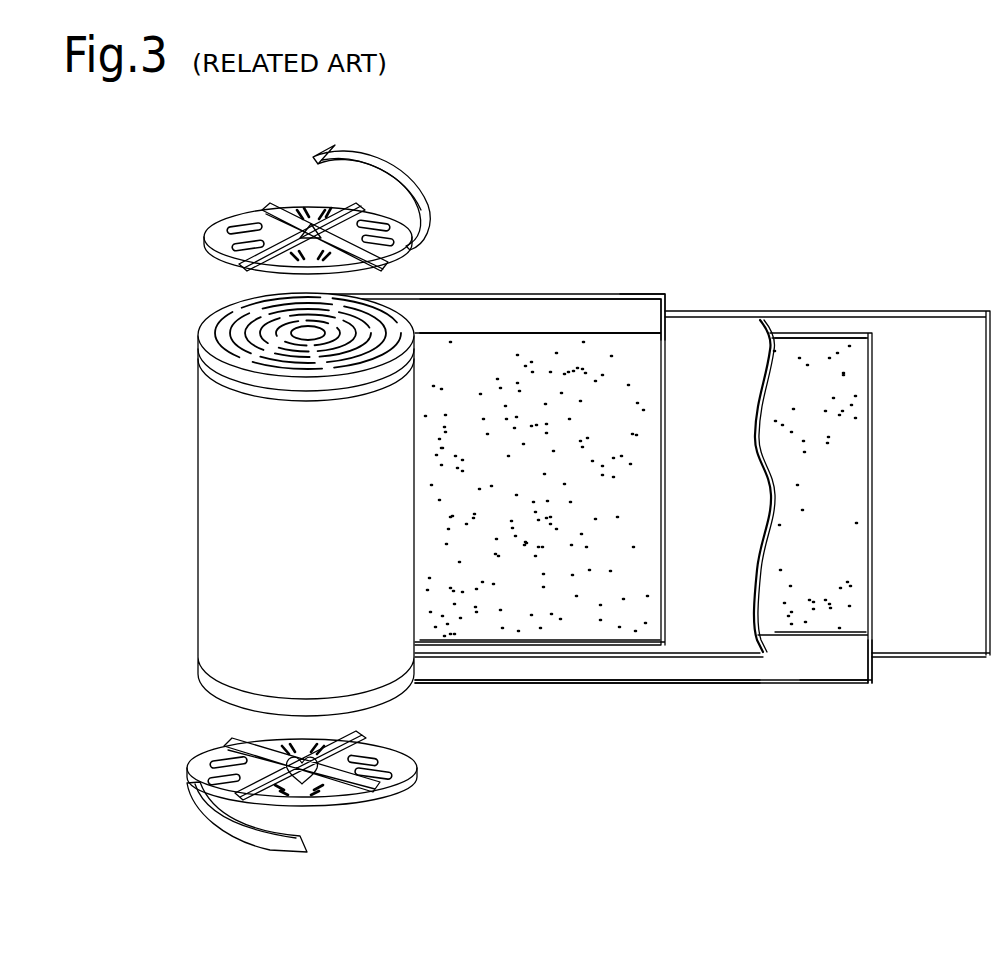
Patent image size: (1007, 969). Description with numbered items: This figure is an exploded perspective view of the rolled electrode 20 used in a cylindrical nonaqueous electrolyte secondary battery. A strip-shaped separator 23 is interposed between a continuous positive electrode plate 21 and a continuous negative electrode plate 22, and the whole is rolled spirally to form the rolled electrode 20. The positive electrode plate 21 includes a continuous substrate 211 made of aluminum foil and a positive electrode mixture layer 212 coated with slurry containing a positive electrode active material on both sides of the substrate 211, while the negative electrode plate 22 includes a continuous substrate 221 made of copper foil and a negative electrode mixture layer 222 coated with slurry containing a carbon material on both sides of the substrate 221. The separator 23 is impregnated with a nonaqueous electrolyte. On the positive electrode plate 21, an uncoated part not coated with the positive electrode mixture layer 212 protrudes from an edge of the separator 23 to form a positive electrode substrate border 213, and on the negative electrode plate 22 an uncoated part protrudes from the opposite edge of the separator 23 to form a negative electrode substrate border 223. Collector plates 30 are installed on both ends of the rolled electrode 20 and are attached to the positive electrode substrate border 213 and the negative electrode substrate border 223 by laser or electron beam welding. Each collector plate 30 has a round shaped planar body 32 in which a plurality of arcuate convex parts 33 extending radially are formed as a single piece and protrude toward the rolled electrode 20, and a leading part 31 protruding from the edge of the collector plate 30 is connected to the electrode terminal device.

The rolled electrode 20 is at (238, 527).
The positive electrode plate 21 is at (637, 618).
The substrate 211 is at (662, 294).
The positive electrode mixture layer 212 is at (597, 360).
The positive electrode substrate border 213 is at (525, 303).
The negative electrode plate 22 is at (852, 604).
The substrate 221 is at (855, 667).
The negative electrode mixture layer 222 is at (807, 625).
The negative electrode substrate border 223 is at (590, 693).
The separator 23 is at (742, 614).
The collector plate 30 is at (340, 498).
The leading part 31 is at (333, 148).
The planar body 32 is at (205, 232).
The arcuate convex part 33 is at (268, 215).